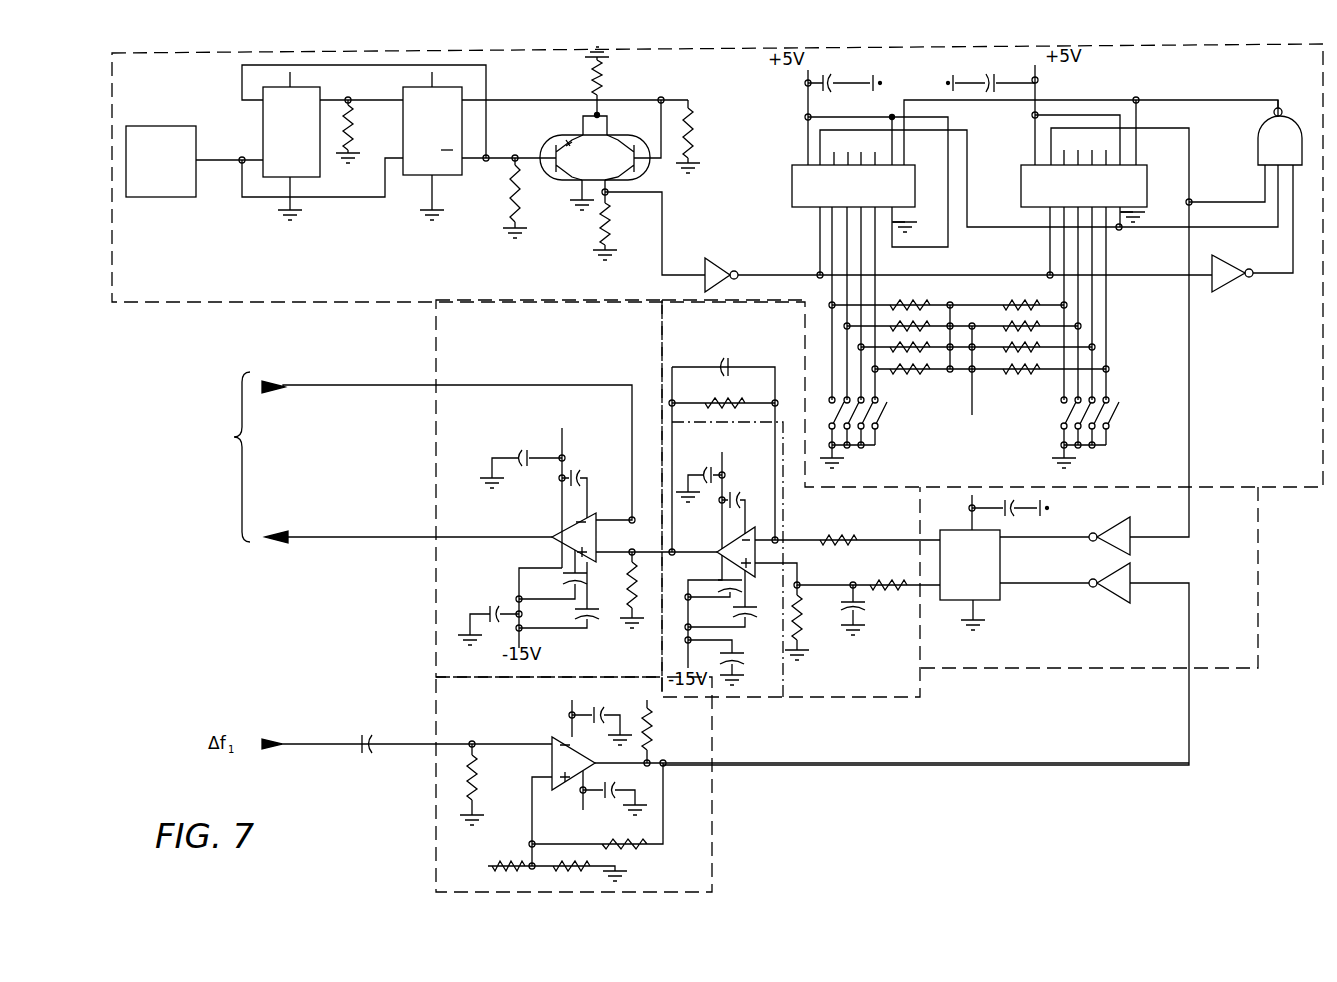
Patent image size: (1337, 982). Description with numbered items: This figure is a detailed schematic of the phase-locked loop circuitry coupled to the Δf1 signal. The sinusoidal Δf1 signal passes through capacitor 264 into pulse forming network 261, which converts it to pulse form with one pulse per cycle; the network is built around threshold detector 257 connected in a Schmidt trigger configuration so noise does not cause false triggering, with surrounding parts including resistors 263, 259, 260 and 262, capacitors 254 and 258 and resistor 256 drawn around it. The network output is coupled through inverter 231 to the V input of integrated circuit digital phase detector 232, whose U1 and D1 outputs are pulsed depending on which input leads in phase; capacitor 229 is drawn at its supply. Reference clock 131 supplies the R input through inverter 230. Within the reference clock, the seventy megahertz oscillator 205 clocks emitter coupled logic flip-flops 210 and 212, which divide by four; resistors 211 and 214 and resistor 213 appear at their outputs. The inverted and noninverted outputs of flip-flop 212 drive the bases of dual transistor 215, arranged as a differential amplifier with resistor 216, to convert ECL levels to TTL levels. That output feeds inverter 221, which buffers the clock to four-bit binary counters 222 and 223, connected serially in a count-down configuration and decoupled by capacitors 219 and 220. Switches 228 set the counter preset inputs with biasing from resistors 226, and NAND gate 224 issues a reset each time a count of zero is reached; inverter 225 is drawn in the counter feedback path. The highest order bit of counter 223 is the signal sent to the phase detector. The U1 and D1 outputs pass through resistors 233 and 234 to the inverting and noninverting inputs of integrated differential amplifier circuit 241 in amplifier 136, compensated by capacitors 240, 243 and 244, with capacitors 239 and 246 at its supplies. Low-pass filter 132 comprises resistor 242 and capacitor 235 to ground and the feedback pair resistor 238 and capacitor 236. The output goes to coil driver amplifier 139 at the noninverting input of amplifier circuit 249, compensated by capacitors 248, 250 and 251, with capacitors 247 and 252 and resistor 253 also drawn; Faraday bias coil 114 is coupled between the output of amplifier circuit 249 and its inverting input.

The 70 MHz oscillator 205 is at (140, 197).
The reference clock 131 is at (373, 298).
The emitter coupled logic flip-flop 210 is at (320, 93).
The resistor 211 is at (355, 128).
The emitter coupled logic flip-flop 212 is at (462, 92).
The resistor 213 is at (600, 78).
The resistor 214 is at (512, 198).
The dual transistor 215 is at (612, 140).
The resistor 216 is at (690, 132).
The capacitor 219 is at (826, 80).
The capacitor 220 is at (991, 74).
The inverter 221 is at (715, 263).
The four-bit binary counter 222 is at (798, 165).
The four-bit binary counter 223 is at (1026, 165).
The NAND gate 224 is at (1271, 131).
The inverter 225 is at (1222, 281).
The resistors 226 is at (1005, 325).
The switches 228 is at (1095, 450).
The capacitor 229 is at (1007, 500).
The inverter 230 is at (1118, 526).
The inverter 231 is at (1108, 576).
The integrated circuit digital phase detector 232 is at (1003, 597).
The resistor 233 is at (837, 537).
The resistor 234 is at (882, 582).
The capacitor 235 is at (862, 607).
The capacitor 236 is at (721, 363).
The resistor 238 is at (722, 400).
The capacitor 239 is at (707, 468).
The capacitor 240 is at (736, 492).
The integrated differential amplifier circuit 241 is at (726, 546).
The resistor 242 is at (802, 614).
The capacitor 243 is at (722, 574).
The capacitor 244 is at (733, 608).
The capacitor 246 is at (740, 657).
The capacitor 247 is at (524, 450).
The capacitor 248 is at (580, 470).
The amplifier circuit 249 is at (557, 526).
The capacitor 250 is at (563, 576).
The capacitor 251 is at (575, 608).
The capacitor 252 is at (496, 604).
The resistor 253 is at (630, 576).
The capacitor 254 is at (570, 717).
The resistor 256 is at (652, 724).
The threshold detector 257 is at (549, 764).
The capacitor 258 is at (613, 786).
The resistor 259 is at (633, 849).
The resistor 260 is at (505, 862).
The resistor 262 is at (556, 872).
The resistor 263 is at (478, 771).
The capacitor 264 is at (367, 736).
The coil driver amplifier 139 is at (632, 325).
The low-pass filter 132 is at (762, 317).
The amplifier 136 is at (714, 697).
The pulse forming network 261 is at (712, 840).
The Faraday bias coil 114 is at (194, 457).